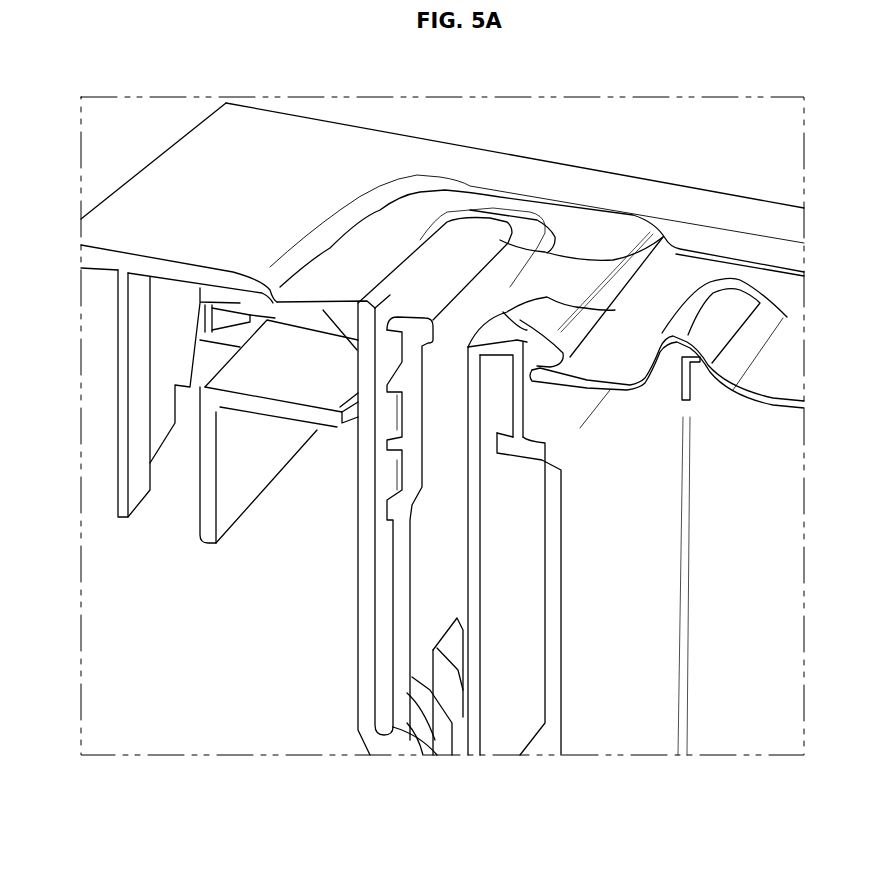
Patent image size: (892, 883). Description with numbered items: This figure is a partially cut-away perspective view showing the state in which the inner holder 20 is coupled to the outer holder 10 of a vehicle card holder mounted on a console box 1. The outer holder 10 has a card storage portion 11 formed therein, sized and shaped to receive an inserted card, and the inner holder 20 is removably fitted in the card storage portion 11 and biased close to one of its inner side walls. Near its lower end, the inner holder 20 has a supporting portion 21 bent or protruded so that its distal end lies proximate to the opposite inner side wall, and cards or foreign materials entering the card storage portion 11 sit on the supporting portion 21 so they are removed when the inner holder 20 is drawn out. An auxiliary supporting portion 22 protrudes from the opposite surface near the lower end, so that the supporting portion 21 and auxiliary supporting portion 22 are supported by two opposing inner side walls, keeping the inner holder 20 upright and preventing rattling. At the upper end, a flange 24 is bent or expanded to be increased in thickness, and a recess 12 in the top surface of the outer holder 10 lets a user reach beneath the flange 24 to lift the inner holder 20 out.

The console box 1 is at (148, 195).
The outer holder 10 is at (365, 618).
The card storage portion 11 is at (515, 448).
The recess 12 is at (615, 310).
The inner holder 20 is at (405, 452).
The supporting portion 21 is at (443, 733).
The auxiliary supporting portion 22 is at (386, 716).
The flange 24 is at (553, 235).